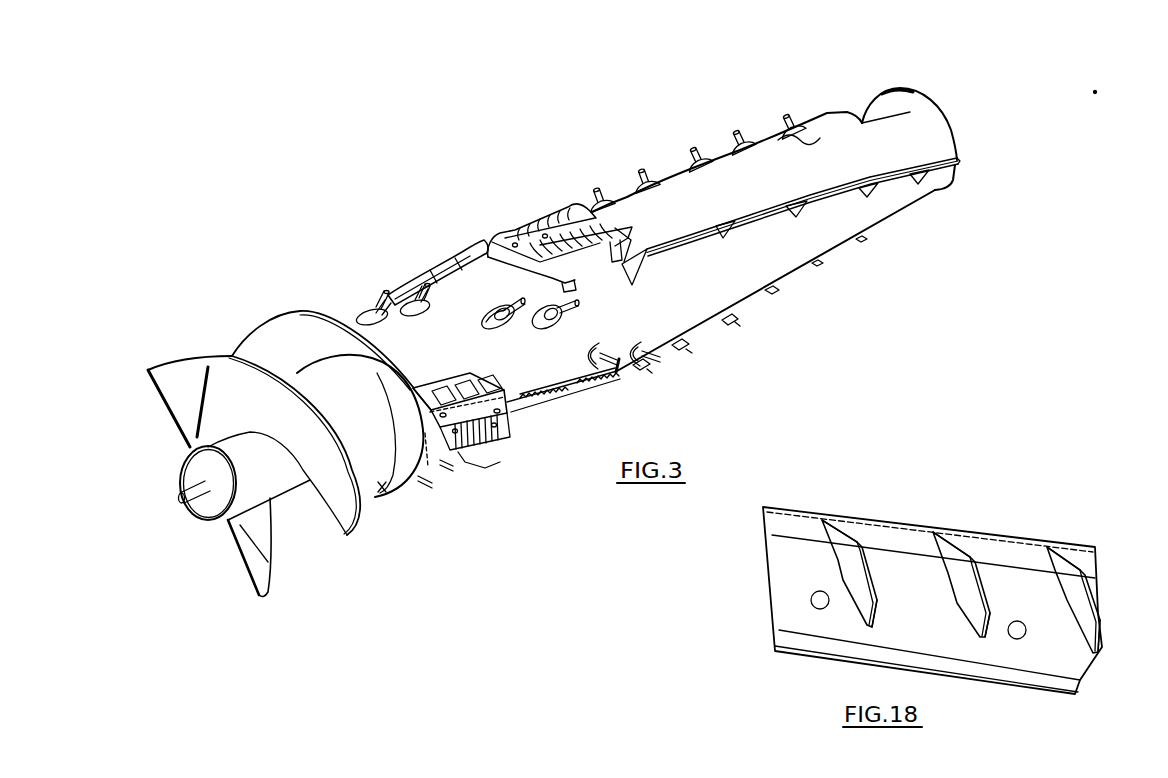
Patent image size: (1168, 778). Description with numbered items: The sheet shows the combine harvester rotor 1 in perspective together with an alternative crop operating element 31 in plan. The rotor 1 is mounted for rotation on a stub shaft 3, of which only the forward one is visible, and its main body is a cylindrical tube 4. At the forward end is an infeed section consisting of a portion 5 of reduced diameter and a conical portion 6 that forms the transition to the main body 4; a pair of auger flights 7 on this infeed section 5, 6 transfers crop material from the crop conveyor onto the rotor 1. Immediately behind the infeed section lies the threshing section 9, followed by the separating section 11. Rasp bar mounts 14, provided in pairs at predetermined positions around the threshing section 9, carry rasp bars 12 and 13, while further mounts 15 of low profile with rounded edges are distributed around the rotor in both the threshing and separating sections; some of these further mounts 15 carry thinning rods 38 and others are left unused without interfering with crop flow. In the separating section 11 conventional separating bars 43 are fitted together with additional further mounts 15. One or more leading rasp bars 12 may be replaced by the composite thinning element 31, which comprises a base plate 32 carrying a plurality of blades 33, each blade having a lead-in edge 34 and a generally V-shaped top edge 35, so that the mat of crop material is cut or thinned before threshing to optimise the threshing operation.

In FIG. 3, the rotor 1 is at (850, 106).
In FIG. 3, the stub shaft 3 is at (198, 503).
In FIG. 3, the cylindrical tube 4 is at (836, 240).
In FIG. 3, the portion of reduced diameter 5 is at (288, 483).
In FIG. 3, the conical portion 6 is at (384, 496).
In FIG. 3, the auger flights 7 is at (248, 343).
In FIG. 3, the threshing section 9 is at (466, 234).
In FIG. 3, the separating section 11 is at (736, 132).
In FIG. 3, the leading rasp bar 12 is at (585, 210).
In FIG. 3, the rasp bar 13 is at (393, 278).
In FIG. 3, the rasp bar mount 14 is at (578, 273).
In FIG. 3, the further mount 15 is at (523, 327).
In FIG. 3, the crop operating element 31 is at (446, 384).
In FIG. 18, the crop operating element 31 is at (932, 517).
In FIG. 18, the base plate 32 is at (773, 570).
In FIG. 18, the blade 33 is at (853, 565).
In FIG. 18, the lead-in edge 34 is at (843, 530).
In FIG. 18, the V-shaped top edge 35 is at (881, 596).
In FIG. 3, the thinning rod 38 is at (757, 137).
In FIG. 3, the separating bar 43 is at (865, 190).